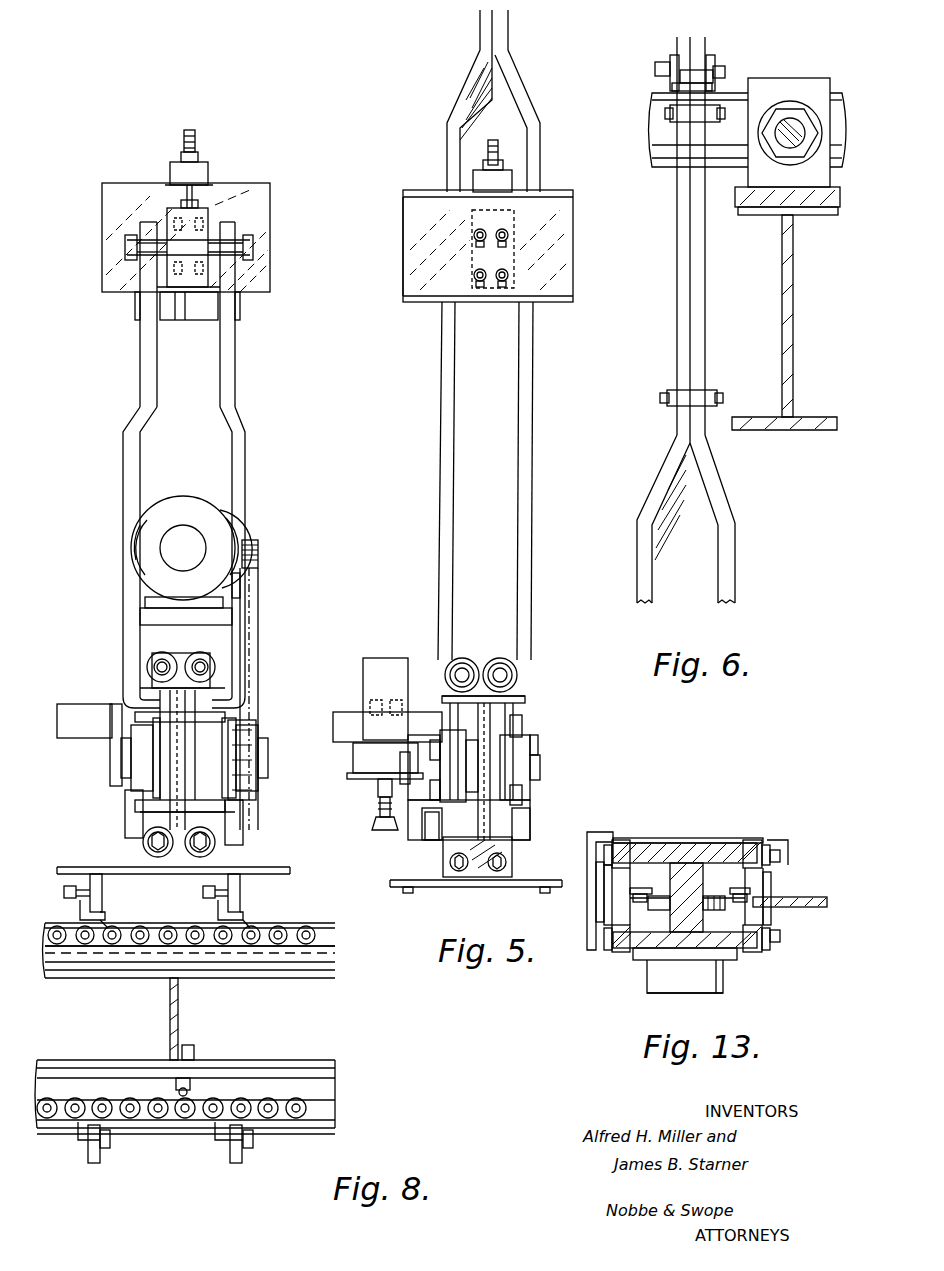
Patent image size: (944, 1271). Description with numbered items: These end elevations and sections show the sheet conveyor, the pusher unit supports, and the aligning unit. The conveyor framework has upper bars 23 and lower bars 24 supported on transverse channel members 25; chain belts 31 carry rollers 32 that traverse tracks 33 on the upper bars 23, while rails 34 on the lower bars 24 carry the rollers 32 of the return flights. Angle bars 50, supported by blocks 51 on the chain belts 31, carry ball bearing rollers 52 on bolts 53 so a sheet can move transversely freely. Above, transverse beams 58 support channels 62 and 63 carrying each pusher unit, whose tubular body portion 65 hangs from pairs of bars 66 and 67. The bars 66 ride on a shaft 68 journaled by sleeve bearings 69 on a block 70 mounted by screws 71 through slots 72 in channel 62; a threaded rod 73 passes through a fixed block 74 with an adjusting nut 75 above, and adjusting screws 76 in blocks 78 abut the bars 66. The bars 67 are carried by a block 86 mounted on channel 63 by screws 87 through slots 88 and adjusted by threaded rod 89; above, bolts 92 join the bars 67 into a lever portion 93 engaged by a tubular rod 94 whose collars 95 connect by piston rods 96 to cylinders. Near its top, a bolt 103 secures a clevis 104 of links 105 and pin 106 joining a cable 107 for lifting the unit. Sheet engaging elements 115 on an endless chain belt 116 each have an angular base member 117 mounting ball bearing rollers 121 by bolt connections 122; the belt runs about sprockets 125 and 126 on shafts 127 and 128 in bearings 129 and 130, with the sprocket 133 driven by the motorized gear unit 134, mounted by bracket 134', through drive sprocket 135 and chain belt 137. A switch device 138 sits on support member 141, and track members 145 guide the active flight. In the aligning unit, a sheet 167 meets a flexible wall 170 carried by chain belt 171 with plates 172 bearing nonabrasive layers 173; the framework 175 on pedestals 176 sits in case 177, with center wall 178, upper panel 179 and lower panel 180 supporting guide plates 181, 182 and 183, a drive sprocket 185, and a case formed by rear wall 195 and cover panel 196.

In FIG. 8, the upper bars 23 is at (250, 972).
In FIG. 8, the lower bars 24 is at (258, 1068).
In FIG. 8, the channel members 25 is at (180, 1000).
In FIG. 8, the chain belts 31 is at (316, 930).
In FIG. 8, the rollers 32 is at (288, 926).
In FIG. 8, the tracks 33 is at (330, 962).
In FIG. 8, the rails or tracks 34 is at (320, 1128).
In FIG. 8, the angle bars 50 is at (80, 908).
In FIG. 8, the blocks 51 is at (105, 920).
In FIG. 8, the ball bearing rollers 52 is at (102, 880).
In FIG. 5, the ball bearing rollers 52 is at (544, 893).
In FIG. 8, the bolts 53 is at (64, 889).
In FIG. 6, the transverse beams 58 is at (782, 272).
In FIG. 8, the channel 62 is at (112, 272).
In FIG. 5, the channel 63 is at (430, 210).
In FIG. 5, the tubular base or body portion 65 is at (505, 765).
In FIG. 8, the bars 66 is at (225, 413).
In FIG. 5, the bars 67 is at (526, 418).
In FIG. 6, the bars 67 is at (722, 560).
In FIG. 8, the shaft 68 is at (254, 247).
In FIG. 8, the sleeve bearings 69 is at (170, 210).
In FIG. 8, the block 70 is at (208, 275).
In FIG. 8, the screws 71 is at (203, 200).
In FIG. 8, the slots 72 is at (188, 300).
In FIG. 8, the threaded rod 73 is at (192, 130).
In FIG. 8, the block 74 is at (198, 172).
In FIG. 8, the adjusting nut 75 is at (198, 155).
In FIG. 8, the adjusting screws 76 is at (139, 320).
In FIG. 8, the blocks 78 is at (203, 305).
In FIG. 5, the block 86 is at (500, 246).
In FIG. 5, the screws 87 is at (474, 276).
In FIG. 5, the slots 88 is at (530, 270).
In FIG. 5, the threaded rod 89 is at (500, 147).
In FIG. 6, the bolts 92 is at (668, 113).
In FIG. 5, the lever portion 93 is at (485, 38).
In FIG. 6, the lever portion 93 is at (692, 324).
In FIG. 6, the tubular rod or bar 94 is at (655, 150).
In FIG. 6, the collars 95 is at (790, 85).
In FIG. 6, the piston rod 96 is at (797, 125).
In FIG. 6, the bolt 103 is at (716, 66).
In FIG. 6, the clevis 104 is at (657, 62).
In FIG. 6, the links 105 is at (672, 58).
In FIG. 6, the pin 106 is at (726, 72).
In FIG. 6, the cable 107 is at (672, 86).
In FIG. 8, the sheet engaging elements 115 is at (224, 660).
In FIG. 5, the sheet engaging elements 115 is at (483, 655).
In FIG. 8, the endless chain belt 116 is at (160, 700).
In FIG. 5, the endless chain belt 116 is at (490, 708).
In FIG. 8, the angular base member 117 is at (150, 680).
In FIG. 5, the angular base member 117 is at (520, 692).
In FIG. 8, the ball bearing rollers 121 is at (200, 652).
In FIG. 5, the ball bearing rollers 121 is at (455, 662).
In FIG. 8, the bolt connections 122 is at (208, 670).
In FIG. 5, the bolt connections 122 is at (510, 672).
In FIG. 5, the sprocket 125 is at (492, 760).
In FIG. 8, the sprocket 126 is at (200, 740).
In FIG. 5, the shaft 127 is at (540, 772).
In FIG. 8, the shaft 128 is at (122, 752).
In FIG. 5, the bearings 129 is at (510, 778).
In FIG. 8, the bearings 130 is at (137, 755).
In FIG. 8, the sprocket 133 is at (256, 745).
In FIG. 8, the motorized gear unit 134 is at (191, 532).
In FIG. 8, the bracket 134' is at (151, 623).
In FIG. 8, the drive sprocket 135 is at (252, 577).
In FIG. 8, the chain belt 137 is at (258, 553).
In FIG. 5, the switch device 138 is at (375, 765).
In FIG. 5, the support member 141 is at (350, 715).
In FIG. 8, the track members 145 is at (123, 823).
In FIG. 5, the track members 145 is at (425, 845).
In FIG. 13, the sheet 167 is at (826, 904).
In FIG. 13, the flexible wall 170 is at (770, 880).
In FIG. 13, the chain belt 171 is at (735, 893).
In FIG. 13, the plates 172 is at (760, 925).
In FIG. 13, the nonabrasive layers 173 is at (768, 912).
In FIG. 13, the framework 175 is at (662, 978).
In FIG. 13, the pedestals 176 is at (722, 975).
In FIG. 13, the case 177 is at (632, 832).
In FIG. 13, the center wall 178 is at (686, 878).
In FIG. 13, the upper panel 179 is at (660, 850).
In FIG. 13, the lower panel 180 is at (682, 940).
In FIG. 13, the plates 181 is at (752, 840).
In FIG. 13, the plates 182 is at (766, 845).
In FIG. 13, the plates 183 is at (786, 846).
In FIG. 13, the drive sprocket 185 is at (655, 896).
In FIG. 13, the rear wall 195 is at (600, 950).
In FIG. 13, the cover panel 196 is at (648, 838).
In FIG. 8, the rail S is at (270, 867).
In FIG. 5, the rail S is at (425, 887).